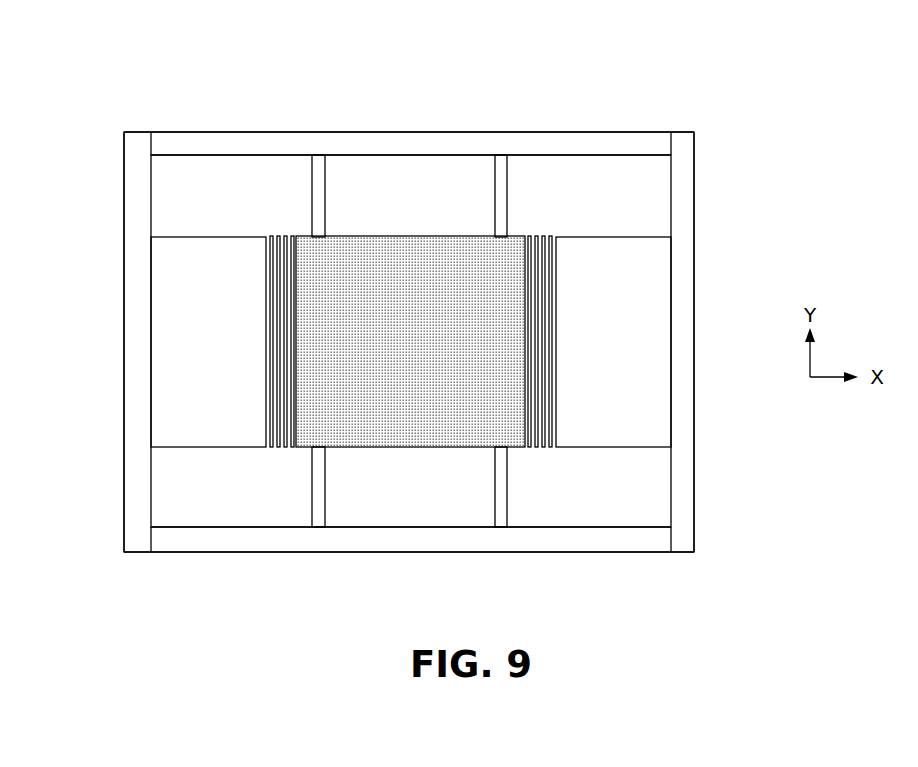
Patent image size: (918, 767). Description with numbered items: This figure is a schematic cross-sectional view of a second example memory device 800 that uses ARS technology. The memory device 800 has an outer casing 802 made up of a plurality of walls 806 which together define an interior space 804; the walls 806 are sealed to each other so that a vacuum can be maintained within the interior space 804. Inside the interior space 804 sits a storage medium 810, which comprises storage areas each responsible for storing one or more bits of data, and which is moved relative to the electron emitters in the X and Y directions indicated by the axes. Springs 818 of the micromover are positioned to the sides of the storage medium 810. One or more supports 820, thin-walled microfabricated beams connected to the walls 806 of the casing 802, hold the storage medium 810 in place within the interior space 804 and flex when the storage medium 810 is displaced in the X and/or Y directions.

The memory device 800 is at (770, 68).
The outer casing 802 is at (722, 172).
The interior space 804 is at (245, 515).
The walls 806 is at (580, 138).
The storage medium 810 is at (430, 349).
The springs 818 is at (246, 370).
The supports 820 is at (322, 192).